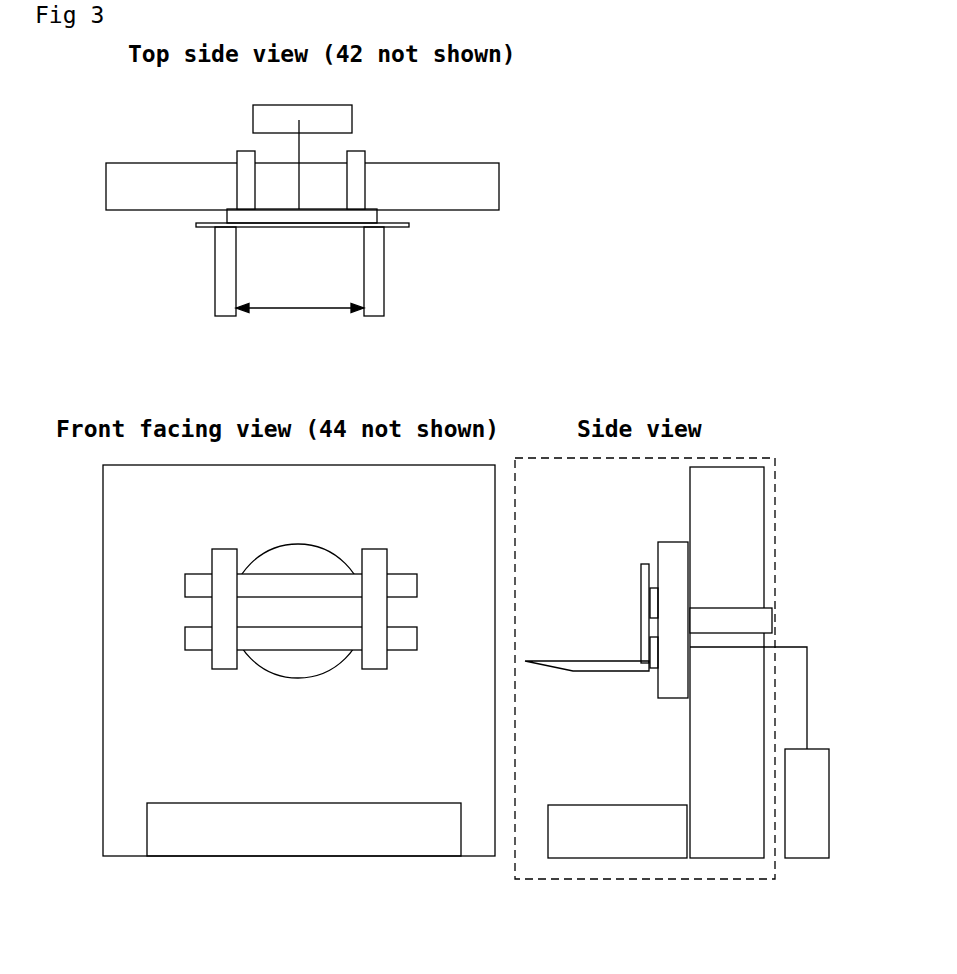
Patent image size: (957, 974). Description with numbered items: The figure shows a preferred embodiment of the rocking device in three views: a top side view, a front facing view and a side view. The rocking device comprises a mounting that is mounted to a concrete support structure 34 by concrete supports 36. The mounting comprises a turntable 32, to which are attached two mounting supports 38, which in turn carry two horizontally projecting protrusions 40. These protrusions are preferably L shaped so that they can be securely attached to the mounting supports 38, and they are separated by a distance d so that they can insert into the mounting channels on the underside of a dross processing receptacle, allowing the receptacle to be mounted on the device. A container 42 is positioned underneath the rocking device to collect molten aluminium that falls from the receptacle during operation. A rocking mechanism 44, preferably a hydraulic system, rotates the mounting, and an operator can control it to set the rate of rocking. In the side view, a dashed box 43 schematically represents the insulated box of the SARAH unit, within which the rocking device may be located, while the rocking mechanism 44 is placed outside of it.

The turntable 32 is at (255, 216).
The concrete support structure 34 is at (477, 202).
The concrete supports 36 is at (353, 162).
The mounting supports 38 is at (410, 232).
The horizontally projecting protrusions 40 is at (375, 286).
The container 42 is at (627, 842).
The dashed box 43 is at (627, 882).
The rocking mechanism 44 is at (345, 117).